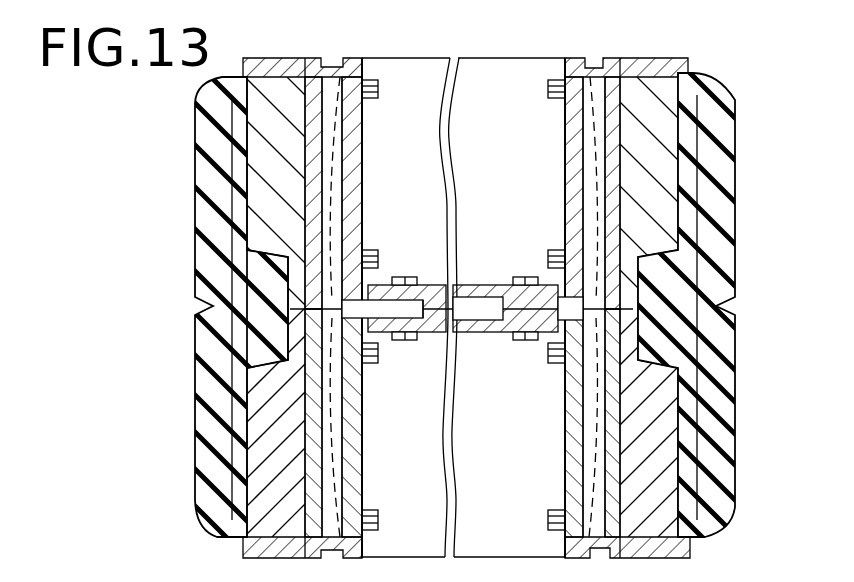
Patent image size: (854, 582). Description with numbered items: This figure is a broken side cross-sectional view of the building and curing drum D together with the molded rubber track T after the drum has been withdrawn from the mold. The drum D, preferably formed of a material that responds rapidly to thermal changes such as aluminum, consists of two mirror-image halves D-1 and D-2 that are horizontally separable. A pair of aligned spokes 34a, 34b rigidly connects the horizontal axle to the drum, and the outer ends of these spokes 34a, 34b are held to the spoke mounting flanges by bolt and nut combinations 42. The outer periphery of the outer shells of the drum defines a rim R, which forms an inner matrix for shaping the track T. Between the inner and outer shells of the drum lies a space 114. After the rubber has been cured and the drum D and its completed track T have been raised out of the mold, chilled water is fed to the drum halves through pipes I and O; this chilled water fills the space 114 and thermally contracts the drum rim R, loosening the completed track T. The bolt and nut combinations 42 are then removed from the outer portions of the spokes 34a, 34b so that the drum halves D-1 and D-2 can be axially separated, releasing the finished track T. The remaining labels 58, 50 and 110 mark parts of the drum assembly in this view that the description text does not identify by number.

The outer frame member 58 is at (230, 192).
The locking key 50 is at (248, 340).
The fastener bracket 110 is at (371, 99).
The space 114 is at (600, 462).
The bolt and nut combinations 42 is at (405, 276).
The spoke 34a is at (430, 286).
The spoke 34b is at (484, 333).
The pipe O is at (380, 83).
The pipe I is at (405, 355).
The building and curing drum D is at (690, 62).
The drum half D-1 is at (509, 484).
The drum half D-2 is at (511, 105).
The rim R is at (666, 135).
The track T is at (728, 196).